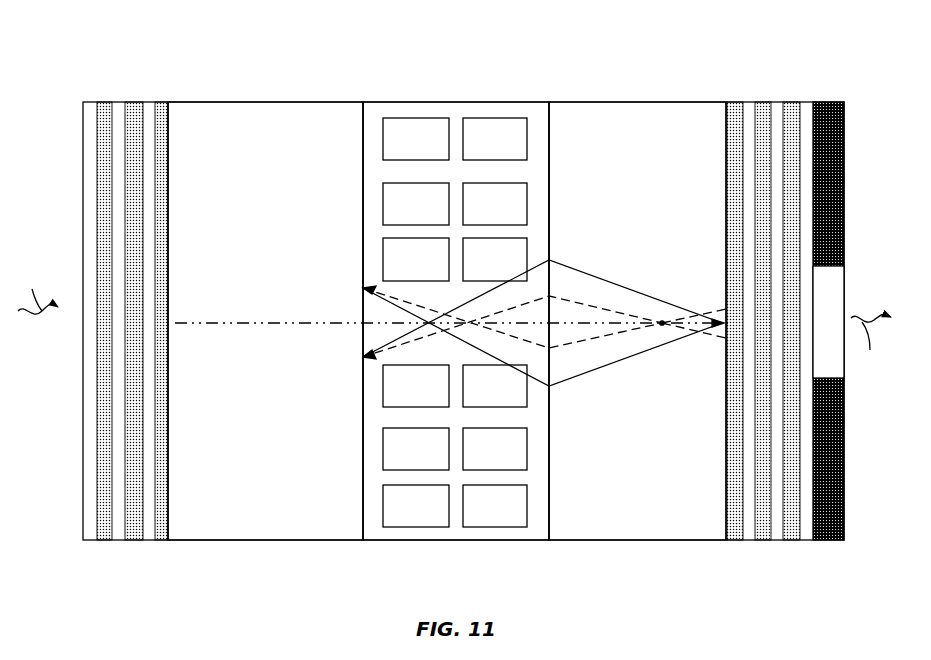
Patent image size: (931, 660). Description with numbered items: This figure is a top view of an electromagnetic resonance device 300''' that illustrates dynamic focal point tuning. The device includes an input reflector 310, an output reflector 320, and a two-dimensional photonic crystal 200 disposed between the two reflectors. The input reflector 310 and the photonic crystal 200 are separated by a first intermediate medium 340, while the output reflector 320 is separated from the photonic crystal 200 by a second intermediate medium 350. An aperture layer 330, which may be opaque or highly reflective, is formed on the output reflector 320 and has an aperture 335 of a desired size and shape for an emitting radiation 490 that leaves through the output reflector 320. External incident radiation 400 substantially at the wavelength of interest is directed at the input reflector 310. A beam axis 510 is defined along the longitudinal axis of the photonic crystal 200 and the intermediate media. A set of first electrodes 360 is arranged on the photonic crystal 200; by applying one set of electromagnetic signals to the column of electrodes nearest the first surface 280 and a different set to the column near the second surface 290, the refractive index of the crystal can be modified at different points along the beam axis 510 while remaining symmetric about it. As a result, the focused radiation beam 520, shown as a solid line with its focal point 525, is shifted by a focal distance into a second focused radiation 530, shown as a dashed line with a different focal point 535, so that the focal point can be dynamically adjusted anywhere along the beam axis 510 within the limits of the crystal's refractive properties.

The electromagnetic resonance device 300''' is at (454, 302).
The input reflector 310 is at (83, 97).
The output reflector 320 is at (727, 97).
The aperture layer 330 is at (858, 300).
The aperture 335 is at (829, 295).
The first intermediate medium 340 is at (272, 102).
The second intermediate medium 350 is at (651, 102).
The 2D photonic crystal 200 is at (456, 324).
The first electrodes 360 is at (490, 527).
The first surface 280 is at (363, 506).
The second surface 290 is at (549, 506).
The external incident radiation 400 is at (35, 286).
The emitting radiation 490 is at (877, 347).
The beam axis 510 is at (208, 323).
The focused radiation beam 520 is at (585, 373).
The second focused radiation 530 is at (578, 300).
The focal point 525 is at (720, 322).
The different focal point 535 is at (662, 323).